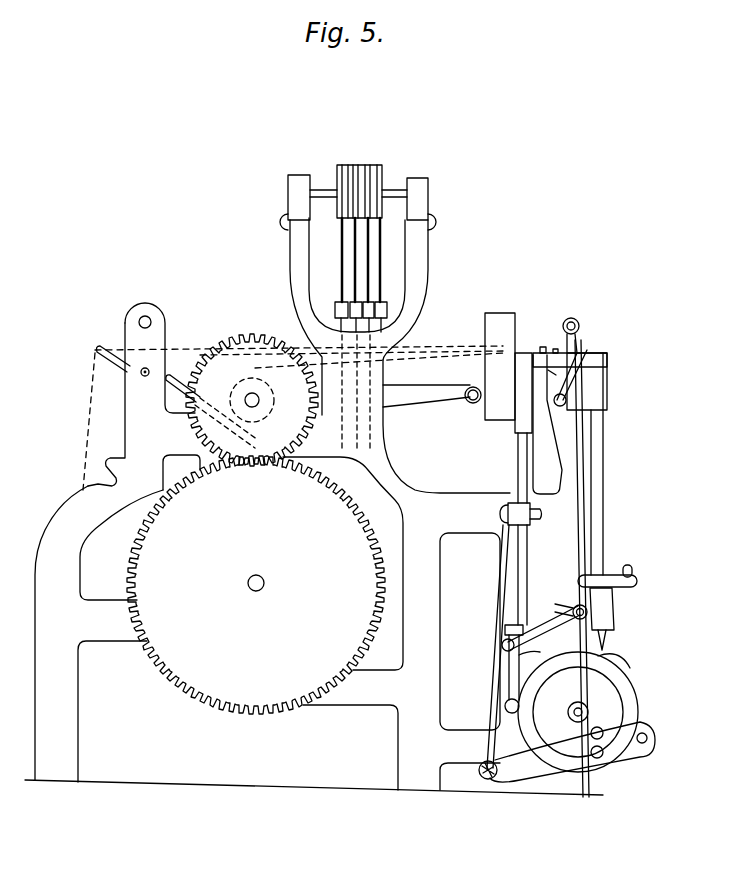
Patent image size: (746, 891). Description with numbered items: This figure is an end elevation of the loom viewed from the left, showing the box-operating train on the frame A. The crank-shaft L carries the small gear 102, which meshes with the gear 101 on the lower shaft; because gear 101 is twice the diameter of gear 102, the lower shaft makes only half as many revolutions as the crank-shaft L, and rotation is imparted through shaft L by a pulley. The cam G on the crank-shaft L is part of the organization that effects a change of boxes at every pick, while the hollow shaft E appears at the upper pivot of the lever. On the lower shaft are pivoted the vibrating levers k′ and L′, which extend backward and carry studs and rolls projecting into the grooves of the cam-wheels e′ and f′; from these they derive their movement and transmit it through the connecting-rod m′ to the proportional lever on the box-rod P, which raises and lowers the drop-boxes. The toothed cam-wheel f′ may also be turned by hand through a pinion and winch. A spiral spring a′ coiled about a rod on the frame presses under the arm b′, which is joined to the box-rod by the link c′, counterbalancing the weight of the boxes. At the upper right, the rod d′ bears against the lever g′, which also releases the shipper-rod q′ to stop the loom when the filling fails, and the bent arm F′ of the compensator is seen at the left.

The frame A is at (321, 574).
The bent arm F′ is at (293, 396).
The hollow shaft E is at (144, 363).
The cam G is at (212, 411).
The crank-shaft L is at (266, 391).
The gear 102 is at (252, 400).
The gear 101 is at (256, 585).
The vibrating lever L′ is at (357, 307).
The box-rod P is at (521, 533).
The cam-wheel f′ is at (553, 374).
The lever g′ is at (581, 363).
The rod d′ is at (587, 381).
The shipper-rod q′ is at (575, 556).
The spiral spring a′ is at (560, 606).
The arm b′ is at (541, 628).
The link c′ is at (529, 657).
The cam-wheel e′ is at (578, 712).
The connecting-rod m′ is at (500, 603).
The vibrating lever k′ is at (572, 752).